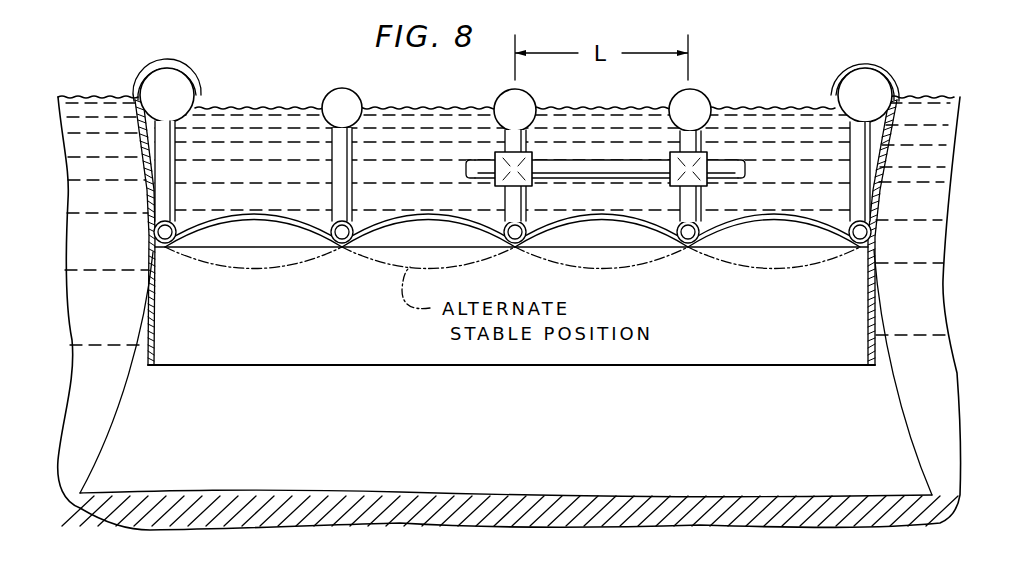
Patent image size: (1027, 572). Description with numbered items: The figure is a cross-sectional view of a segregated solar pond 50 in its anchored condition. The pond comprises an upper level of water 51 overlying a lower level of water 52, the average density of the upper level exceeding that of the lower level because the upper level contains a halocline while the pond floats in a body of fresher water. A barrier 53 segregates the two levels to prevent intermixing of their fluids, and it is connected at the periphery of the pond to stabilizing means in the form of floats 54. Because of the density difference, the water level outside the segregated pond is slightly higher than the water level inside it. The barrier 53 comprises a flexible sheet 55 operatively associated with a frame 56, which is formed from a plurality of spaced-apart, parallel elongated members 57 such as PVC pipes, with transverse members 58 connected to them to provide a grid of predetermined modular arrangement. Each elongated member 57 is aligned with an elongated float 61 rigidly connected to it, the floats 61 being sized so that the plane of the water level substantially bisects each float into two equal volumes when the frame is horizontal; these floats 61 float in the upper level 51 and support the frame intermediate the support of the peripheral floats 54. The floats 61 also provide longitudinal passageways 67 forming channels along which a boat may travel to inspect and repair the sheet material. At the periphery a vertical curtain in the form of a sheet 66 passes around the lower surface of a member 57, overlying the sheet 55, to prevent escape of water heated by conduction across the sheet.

The segregated solar pond 50 is at (797, 44).
The upper level of water 51 is at (592, 146).
The lower level of water 52 is at (853, 313).
The barrier 53 is at (392, 210).
The floats 54 is at (157, 82).
The flexible sheet 55 is at (590, 214).
The frame 56 is at (347, 252).
The elongated members 57 is at (337, 222).
The transverse members 58 is at (188, 222).
The elongated floats 61 is at (348, 100).
The sheet 66 is at (155, 333).
The longitudinal passageways 67 is at (272, 103).